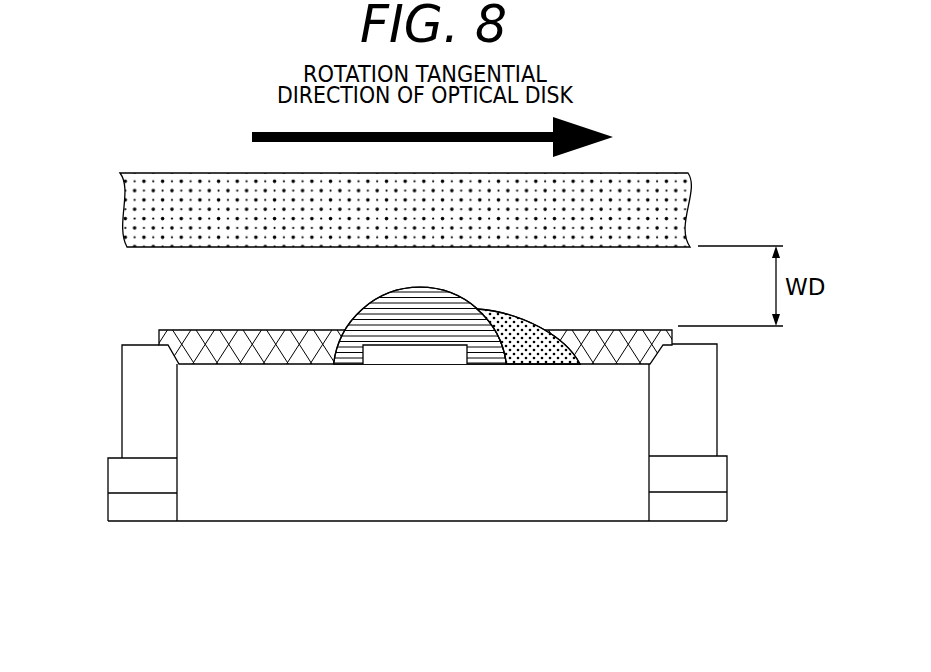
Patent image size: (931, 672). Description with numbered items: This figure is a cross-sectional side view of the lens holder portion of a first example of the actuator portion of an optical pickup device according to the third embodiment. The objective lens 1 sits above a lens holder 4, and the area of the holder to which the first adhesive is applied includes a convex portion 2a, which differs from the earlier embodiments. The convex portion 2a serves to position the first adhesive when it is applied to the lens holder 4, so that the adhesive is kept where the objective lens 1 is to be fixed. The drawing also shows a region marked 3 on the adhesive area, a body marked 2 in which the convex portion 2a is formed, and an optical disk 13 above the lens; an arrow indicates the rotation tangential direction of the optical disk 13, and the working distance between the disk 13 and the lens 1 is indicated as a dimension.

The objective lens 1 is at (218, 333).
The substrate 2 is at (360, 330).
The convex portion 2a is at (408, 357).
The lubricant / adhesion layer region 3 is at (520, 321).
The lens holder 4 is at (690, 403).
The optical disk 13 is at (670, 204).